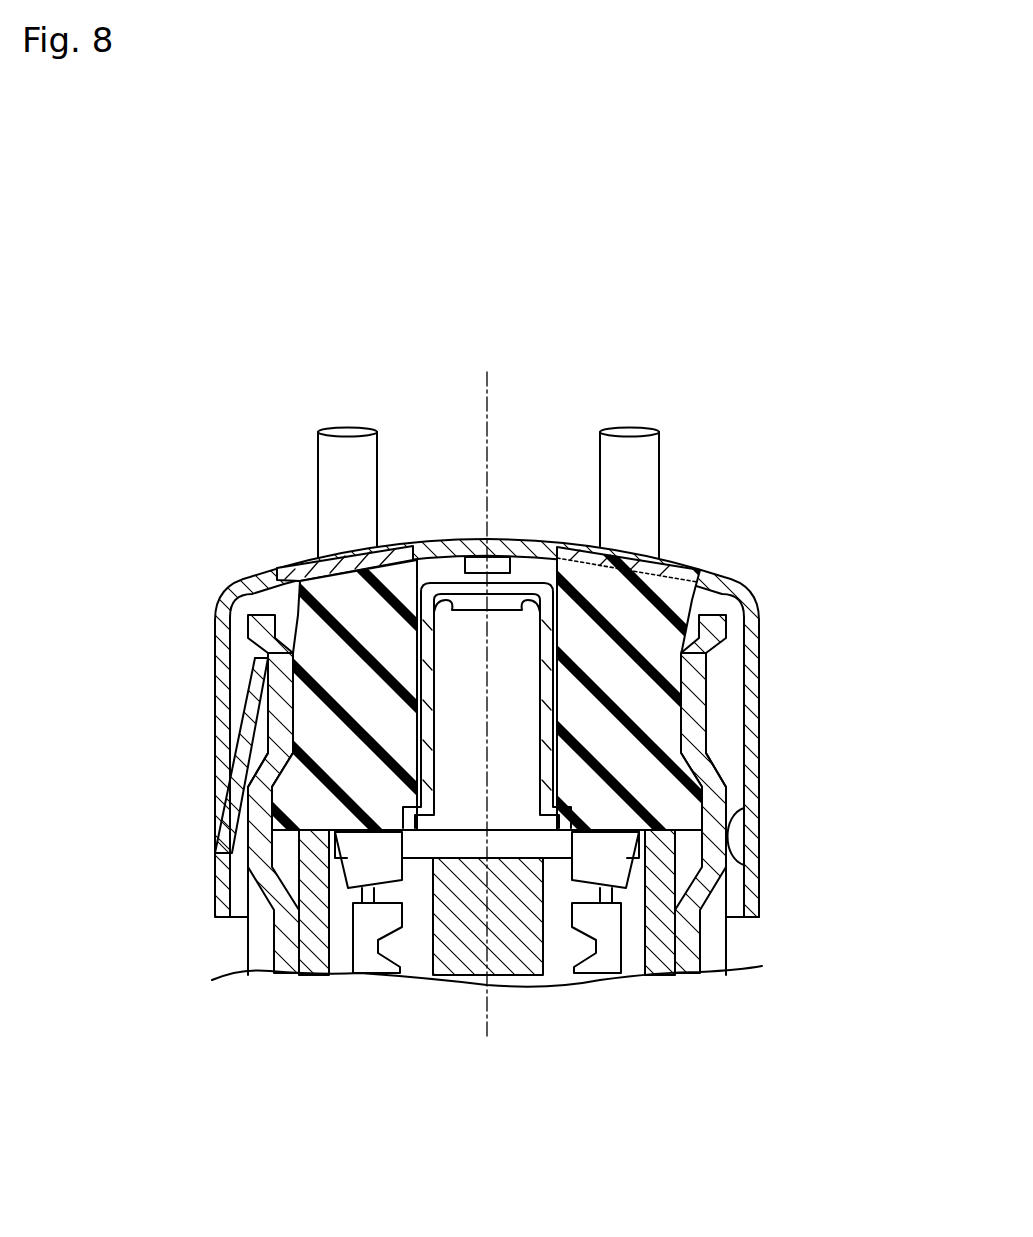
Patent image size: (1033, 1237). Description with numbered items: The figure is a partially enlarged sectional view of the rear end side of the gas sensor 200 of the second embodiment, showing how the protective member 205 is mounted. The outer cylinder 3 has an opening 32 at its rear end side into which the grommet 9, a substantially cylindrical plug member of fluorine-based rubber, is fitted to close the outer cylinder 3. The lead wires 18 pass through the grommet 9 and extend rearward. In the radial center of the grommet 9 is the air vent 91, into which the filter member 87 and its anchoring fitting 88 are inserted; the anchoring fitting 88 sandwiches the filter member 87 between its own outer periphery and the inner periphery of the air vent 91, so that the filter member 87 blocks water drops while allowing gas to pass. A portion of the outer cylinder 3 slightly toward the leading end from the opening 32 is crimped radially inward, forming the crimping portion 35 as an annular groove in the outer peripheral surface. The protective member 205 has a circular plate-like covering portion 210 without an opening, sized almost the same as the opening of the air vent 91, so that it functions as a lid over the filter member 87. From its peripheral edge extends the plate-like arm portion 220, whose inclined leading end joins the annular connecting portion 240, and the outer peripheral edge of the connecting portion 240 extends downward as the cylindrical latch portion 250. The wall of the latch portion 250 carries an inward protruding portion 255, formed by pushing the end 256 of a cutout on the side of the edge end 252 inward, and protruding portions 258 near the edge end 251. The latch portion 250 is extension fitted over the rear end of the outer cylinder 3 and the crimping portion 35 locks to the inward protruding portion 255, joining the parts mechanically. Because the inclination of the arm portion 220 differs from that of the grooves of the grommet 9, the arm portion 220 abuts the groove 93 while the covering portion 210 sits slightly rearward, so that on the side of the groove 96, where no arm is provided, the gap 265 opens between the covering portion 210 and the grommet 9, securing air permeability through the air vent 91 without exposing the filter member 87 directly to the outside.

The gas sensor 200 is at (803, 216).
The protective member 205 is at (815, 500).
The covering portion 210 is at (538, 510).
The lead wires 18 is at (355, 452).
The arm portion 220 is at (310, 568).
The gap 265 is at (655, 546).
The groove 93 is at (404, 570).
The groove 96 is at (672, 562).
The connecting portion 240 is at (238, 602).
The edge end 252 is at (784, 640).
The latch portion 250 is at (752, 745).
The edge end 251 is at (780, 918).
The protruding portion 258 is at (737, 838).
The opening 32 is at (691, 622).
The crimping portion 35 is at (246, 770).
The inward protruding portion 255 is at (247, 747).
The end 256 is at (233, 687).
The outer cylinder 3 is at (284, 965).
The grommet 9 is at (368, 962).
The air vent 91 is at (420, 683).
The anchoring fitting 88 is at (537, 713).
The filter member 87 is at (600, 962).